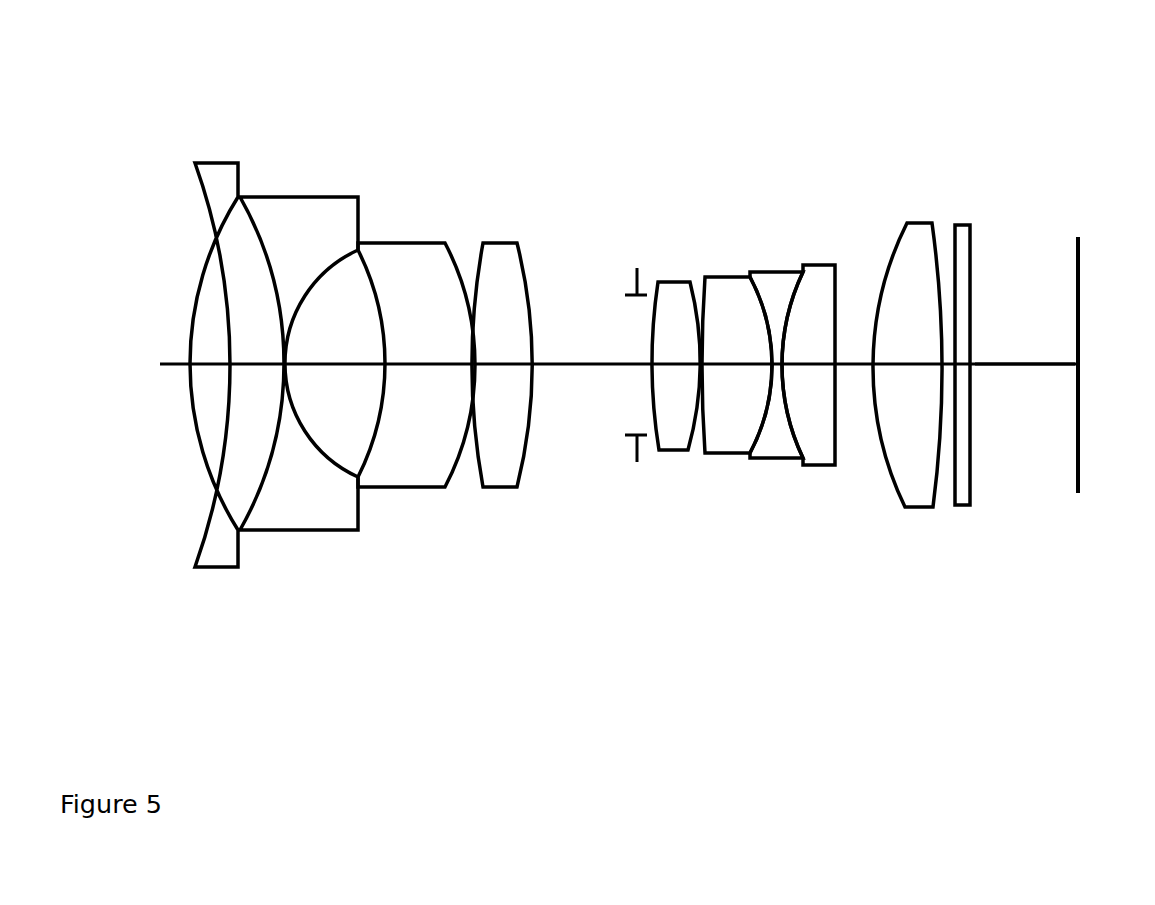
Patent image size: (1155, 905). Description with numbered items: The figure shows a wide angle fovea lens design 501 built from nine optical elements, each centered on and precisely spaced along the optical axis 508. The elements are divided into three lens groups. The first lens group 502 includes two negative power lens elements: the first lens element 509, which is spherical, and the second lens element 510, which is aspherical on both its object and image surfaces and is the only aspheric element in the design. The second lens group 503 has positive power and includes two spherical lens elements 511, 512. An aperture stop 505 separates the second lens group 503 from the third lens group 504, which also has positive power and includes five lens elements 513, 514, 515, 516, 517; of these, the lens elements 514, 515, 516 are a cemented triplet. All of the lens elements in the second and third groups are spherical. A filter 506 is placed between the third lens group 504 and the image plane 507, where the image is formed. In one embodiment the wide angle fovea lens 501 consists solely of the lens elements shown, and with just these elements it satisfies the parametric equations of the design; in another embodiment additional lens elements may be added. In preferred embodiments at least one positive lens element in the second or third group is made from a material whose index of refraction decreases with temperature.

The wide angle fovea lens design 501 is at (568, 640).
The first lens group 502 is at (172, 113).
The second lens group 503 is at (619, 163).
The third lens group 504 is at (945, 170).
The aperture stop 505 is at (637, 495).
The filter 506 is at (980, 219).
The image plane 507 is at (1090, 222).
The optical axis 508 is at (1024, 388).
The first lens element 509 is at (217, 533).
The second lens element 510 is at (320, 499).
The lens element 511 is at (433, 445).
The lens element 512 is at (505, 443).
The lens element 513 is at (674, 450).
The lens element 514 is at (728, 444).
The lens element 515 is at (787, 460).
The lens element 516 is at (823, 437).
The lens element 517 is at (904, 470).